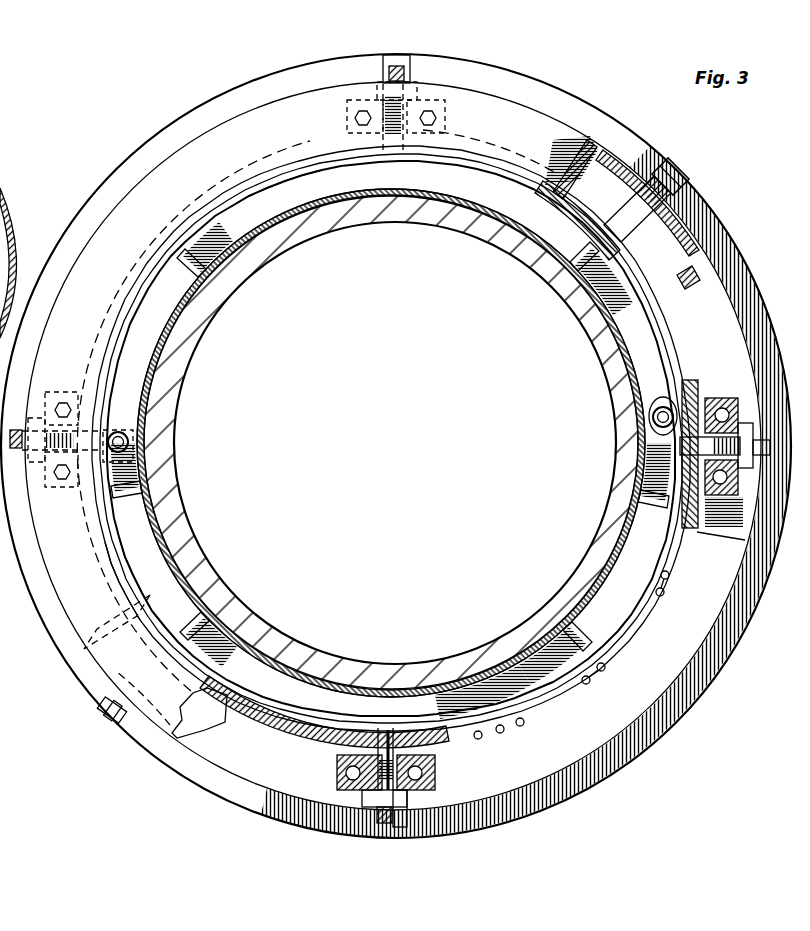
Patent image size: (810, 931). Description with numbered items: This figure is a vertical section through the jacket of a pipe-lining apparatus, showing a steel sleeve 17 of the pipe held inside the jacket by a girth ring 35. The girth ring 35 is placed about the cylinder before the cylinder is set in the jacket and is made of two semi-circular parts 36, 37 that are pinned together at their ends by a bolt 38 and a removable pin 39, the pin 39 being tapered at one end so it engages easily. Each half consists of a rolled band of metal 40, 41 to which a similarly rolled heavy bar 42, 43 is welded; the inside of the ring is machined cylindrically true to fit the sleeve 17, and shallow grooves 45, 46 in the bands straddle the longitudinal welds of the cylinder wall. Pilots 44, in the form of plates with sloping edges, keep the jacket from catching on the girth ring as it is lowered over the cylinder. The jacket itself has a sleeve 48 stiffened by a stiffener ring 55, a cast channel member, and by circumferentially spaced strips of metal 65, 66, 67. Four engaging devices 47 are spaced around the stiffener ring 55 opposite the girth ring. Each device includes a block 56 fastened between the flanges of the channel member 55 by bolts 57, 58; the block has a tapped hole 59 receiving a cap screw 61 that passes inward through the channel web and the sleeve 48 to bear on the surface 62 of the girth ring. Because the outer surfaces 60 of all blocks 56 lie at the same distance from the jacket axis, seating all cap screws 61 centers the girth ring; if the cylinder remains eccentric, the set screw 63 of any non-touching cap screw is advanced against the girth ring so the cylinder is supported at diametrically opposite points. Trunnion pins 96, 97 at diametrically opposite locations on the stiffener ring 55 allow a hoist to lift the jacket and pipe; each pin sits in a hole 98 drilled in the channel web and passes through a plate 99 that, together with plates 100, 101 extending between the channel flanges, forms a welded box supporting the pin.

The steel sleeve 17 is at (372, 198).
The girth ring 35 is at (130, 566).
The semi-circular part 36 is at (152, 570).
The semi-circular part 37 is at (276, 206).
The bolt 38 is at (128, 440).
The removable pin 39 is at (656, 422).
The band of metal 40 is at (405, 192).
The band of metal 41 is at (328, 703).
The heavy bar 42 is at (299, 186).
The heavy bar 43 is at (255, 712).
The pilot 44 is at (222, 240).
The shallow groove 45 is at (470, 676).
The shallow groove 46 is at (525, 228).
The engaging device 47 is at (442, 74).
The sleeve 48 is at (465, 162).
The stiffener ring 55 is at (540, 124).
The block 56 is at (708, 400).
The bolt 57 is at (318, 776).
The bolt 58 is at (714, 403).
The tapped hole 59 is at (355, 793).
The outer surface 60 is at (440, 97).
The cap screw 61 is at (700, 446).
The surface of the girth ring 62 is at (165, 612).
The set screw 63 is at (16, 430).
The strip of metal 65 is at (506, 733).
The strip of metal 66 is at (604, 673).
The strip of metal 67 is at (669, 576).
The trunnion pin 96 is at (100, 715).
The trunnion pin 97 is at (690, 178).
The hole 98 is at (632, 209).
The plate 99 is at (76, 685).
The plate 100 is at (195, 742).
The plate 101 is at (93, 636).